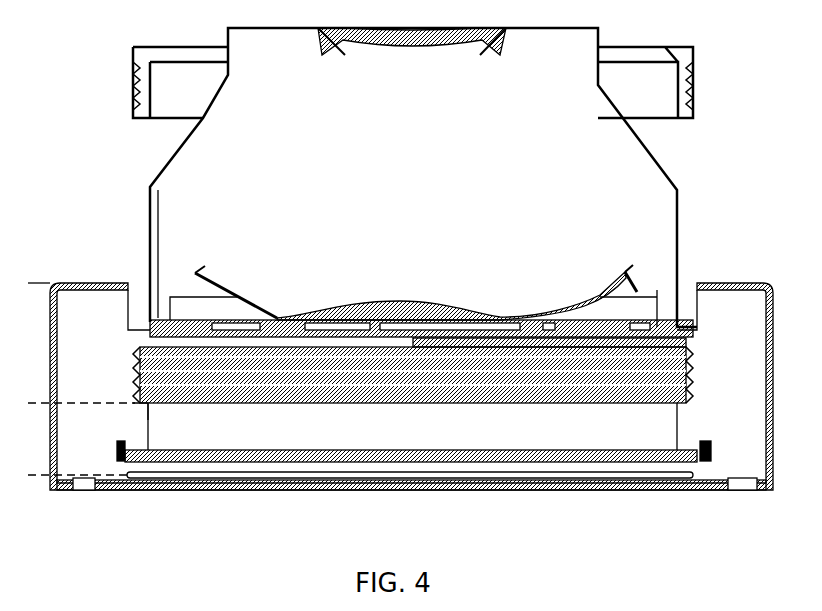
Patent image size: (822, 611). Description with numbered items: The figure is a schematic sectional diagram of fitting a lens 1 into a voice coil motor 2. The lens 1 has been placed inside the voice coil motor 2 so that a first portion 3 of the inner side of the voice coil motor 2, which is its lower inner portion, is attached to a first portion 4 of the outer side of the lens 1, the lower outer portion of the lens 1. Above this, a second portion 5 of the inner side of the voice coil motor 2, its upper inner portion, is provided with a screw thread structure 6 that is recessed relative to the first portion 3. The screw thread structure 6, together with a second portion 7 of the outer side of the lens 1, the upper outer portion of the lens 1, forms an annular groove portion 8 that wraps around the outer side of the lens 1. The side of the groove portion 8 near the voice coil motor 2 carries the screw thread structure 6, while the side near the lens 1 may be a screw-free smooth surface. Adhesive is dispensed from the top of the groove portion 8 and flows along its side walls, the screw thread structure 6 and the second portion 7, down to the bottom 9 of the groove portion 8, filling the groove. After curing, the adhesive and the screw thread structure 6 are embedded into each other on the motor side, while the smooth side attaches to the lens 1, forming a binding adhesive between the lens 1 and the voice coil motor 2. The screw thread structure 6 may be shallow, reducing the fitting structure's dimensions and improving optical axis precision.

The lens 1 is at (667, 175).
The voice coil motor 2 is at (709, 283).
The first portion of the inner side of the voice coil motor 3 is at (48, 403).
The first portion of the outer side of the lens 4 is at (160, 245).
The second portion of the inner side of the voice coil motor 5 is at (48, 403).
The screw thread structure 6 is at (115, 333).
The second portion of the outer side of the lens 7 is at (160, 190).
The groove portion 8 is at (185, 352).
The bottom of the groove portion 9 is at (138, 407).